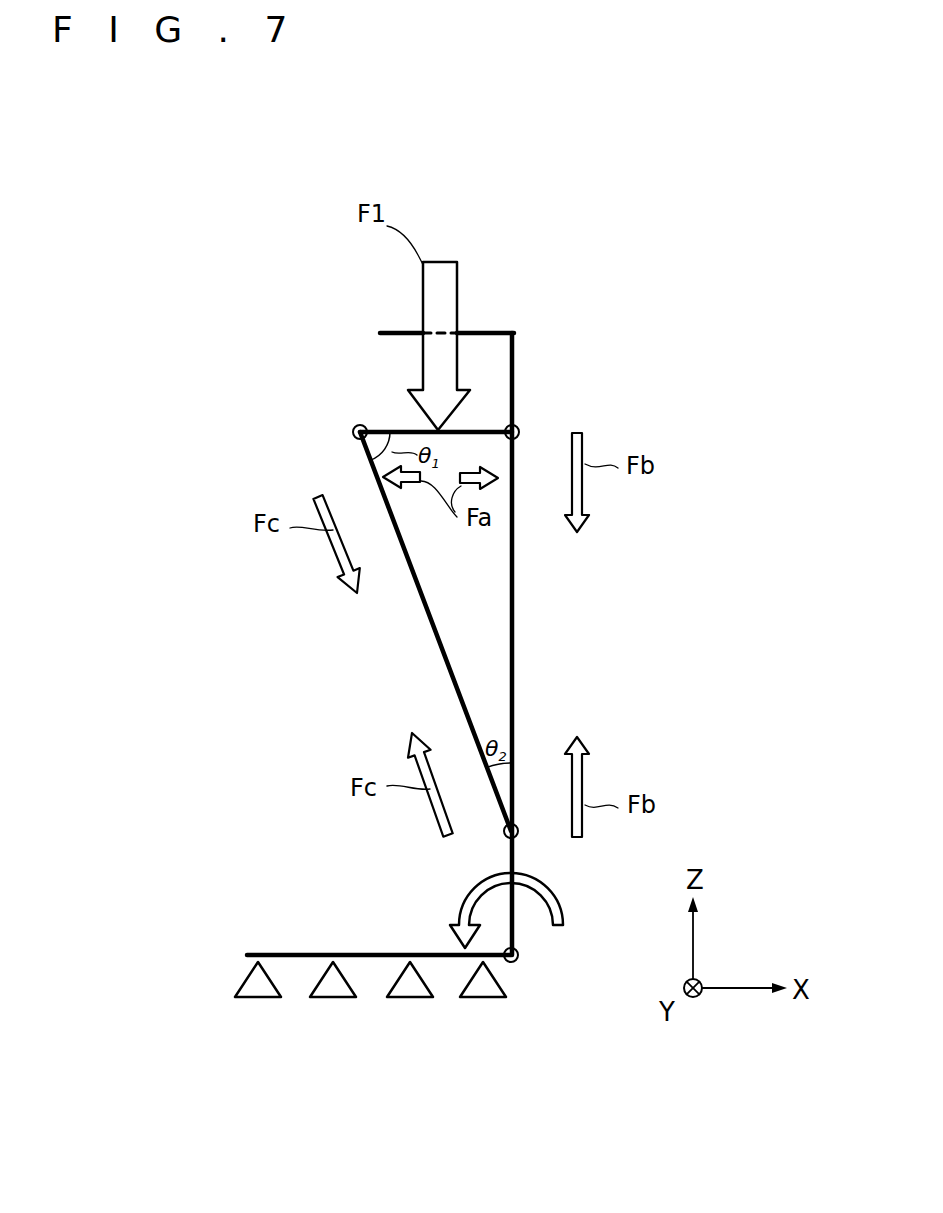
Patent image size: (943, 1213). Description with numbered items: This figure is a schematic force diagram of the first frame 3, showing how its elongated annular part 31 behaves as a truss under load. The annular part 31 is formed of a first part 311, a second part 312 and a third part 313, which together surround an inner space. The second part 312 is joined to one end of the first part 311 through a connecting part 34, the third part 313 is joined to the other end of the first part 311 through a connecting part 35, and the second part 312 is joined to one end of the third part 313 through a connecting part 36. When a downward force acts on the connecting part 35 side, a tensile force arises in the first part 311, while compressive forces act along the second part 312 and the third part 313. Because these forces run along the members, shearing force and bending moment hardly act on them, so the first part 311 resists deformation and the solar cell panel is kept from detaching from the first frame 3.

The first frame 3 is at (436, 611).
The annular part 31 is at (436, 633).
The first part 311 is at (481, 430).
The second part 312 is at (515, 470).
The third part 313 is at (380, 495).
The connecting part 34 is at (519, 429).
The connecting part 35 is at (355, 427).
The connecting part 36 is at (519, 835).